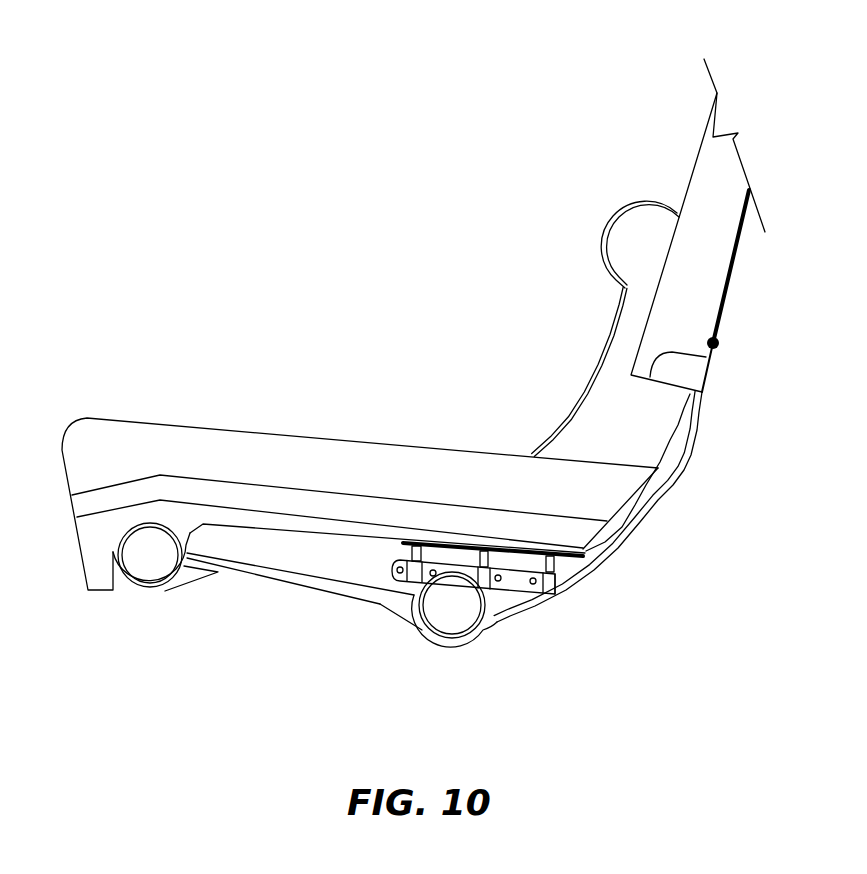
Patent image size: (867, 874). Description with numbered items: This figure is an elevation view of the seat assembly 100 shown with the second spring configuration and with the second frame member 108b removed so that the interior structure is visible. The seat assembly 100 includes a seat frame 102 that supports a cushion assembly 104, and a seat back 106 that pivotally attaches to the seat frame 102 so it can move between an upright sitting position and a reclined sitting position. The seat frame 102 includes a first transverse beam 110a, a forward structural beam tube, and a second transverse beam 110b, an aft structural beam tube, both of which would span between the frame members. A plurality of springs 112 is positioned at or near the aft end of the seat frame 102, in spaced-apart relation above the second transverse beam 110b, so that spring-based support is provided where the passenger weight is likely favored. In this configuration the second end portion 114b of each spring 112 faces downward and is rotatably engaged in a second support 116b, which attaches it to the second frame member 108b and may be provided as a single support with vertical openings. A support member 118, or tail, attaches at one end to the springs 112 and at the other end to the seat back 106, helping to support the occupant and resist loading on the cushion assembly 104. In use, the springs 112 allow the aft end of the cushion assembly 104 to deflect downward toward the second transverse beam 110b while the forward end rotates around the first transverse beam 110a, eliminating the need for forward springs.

The seat assembly 100 is at (309, 335).
The seat frame 102 is at (580, 583).
The cushion assembly 104 is at (145, 422).
The seat back 106 is at (698, 138).
The second frame member 108b is at (598, 403).
The first transverse beam 110a is at (128, 588).
The second transverse beam 110b is at (422, 618).
The spring 112 is at (403, 543).
The second end portion 114b is at (555, 580).
The second support 116b is at (500, 583).
The support member 118 is at (678, 430).